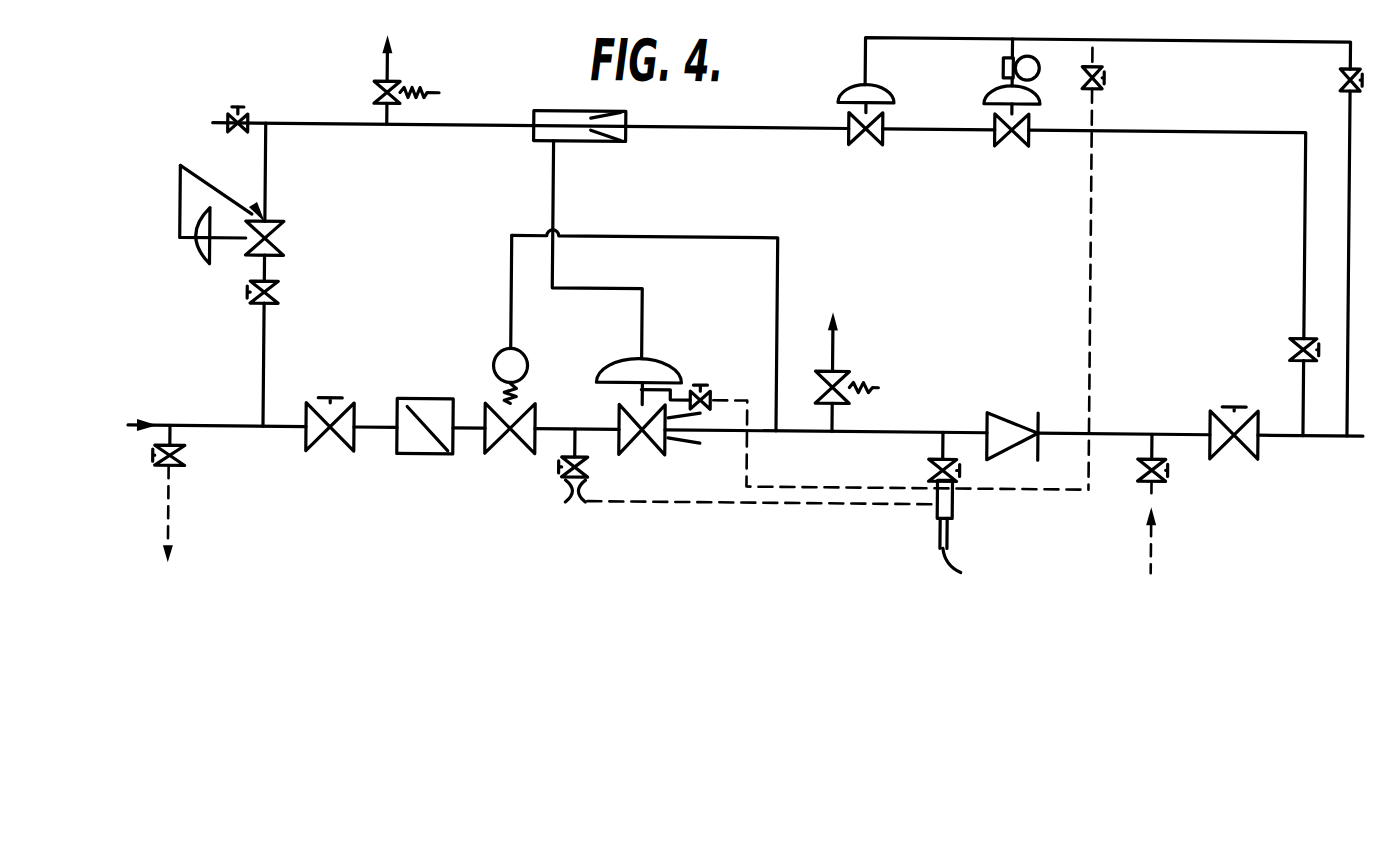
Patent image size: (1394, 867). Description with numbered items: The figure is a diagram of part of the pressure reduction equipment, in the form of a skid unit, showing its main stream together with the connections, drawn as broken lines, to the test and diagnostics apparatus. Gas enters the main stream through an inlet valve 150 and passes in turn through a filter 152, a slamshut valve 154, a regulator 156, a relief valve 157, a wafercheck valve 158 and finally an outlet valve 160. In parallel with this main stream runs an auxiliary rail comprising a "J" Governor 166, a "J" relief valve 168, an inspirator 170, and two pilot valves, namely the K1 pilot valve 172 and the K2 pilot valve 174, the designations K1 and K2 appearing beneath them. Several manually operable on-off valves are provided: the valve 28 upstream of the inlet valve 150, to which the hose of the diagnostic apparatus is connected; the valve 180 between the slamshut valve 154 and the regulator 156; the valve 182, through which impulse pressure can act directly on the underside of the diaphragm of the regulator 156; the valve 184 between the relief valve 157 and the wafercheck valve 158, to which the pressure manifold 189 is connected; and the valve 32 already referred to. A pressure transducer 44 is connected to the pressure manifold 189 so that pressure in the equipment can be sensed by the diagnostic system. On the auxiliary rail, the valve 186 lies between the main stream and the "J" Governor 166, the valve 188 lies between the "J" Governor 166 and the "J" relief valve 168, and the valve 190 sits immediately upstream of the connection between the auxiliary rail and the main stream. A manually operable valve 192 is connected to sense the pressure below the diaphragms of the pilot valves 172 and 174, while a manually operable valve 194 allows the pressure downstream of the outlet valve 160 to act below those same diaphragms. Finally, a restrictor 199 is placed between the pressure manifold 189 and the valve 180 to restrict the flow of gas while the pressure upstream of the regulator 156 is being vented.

The manually operable on-off valve 28 is at (176, 467).
The manually operable on-off valve 32 is at (1160, 468).
The pressure transducer 44 is at (938, 526).
The inlet valve 150 is at (320, 445).
The filter 152 is at (440, 451).
The slamshut valve 154 is at (532, 404).
The regulator 156 is at (652, 440).
The relief valve 157 is at (837, 365).
The wafercheck valve 158 is at (998, 412).
The outlet valve 160 is at (1255, 445).
The "J" Governor 166 is at (283, 233).
The "J" relief valve 168 is at (398, 86).
The inspirator 170 is at (580, 126).
The K1 pilot valve 172 is at (845, 129).
The K2 pilot valve 174 is at (992, 131).
The manually operable on-off valve 180 is at (566, 450).
The manually operable on-off valve 182 is at (707, 383).
The manually operable on-off valve 184 is at (935, 456).
The manually operable on-off valve 186 is at (283, 291).
The manually operable on-off valve 188 is at (244, 112).
The pressure manifold 189 is at (953, 492).
The manually operable on-off valve 190 is at (1296, 329).
The manually operable valve 192 is at (1098, 66).
The manually operable valve 194 is at (1337, 62).
The restrictor 199 is at (566, 486).
The K1 pilot valve K1 is at (825, 142).
The K2 pilot valve K2 is at (974, 127).